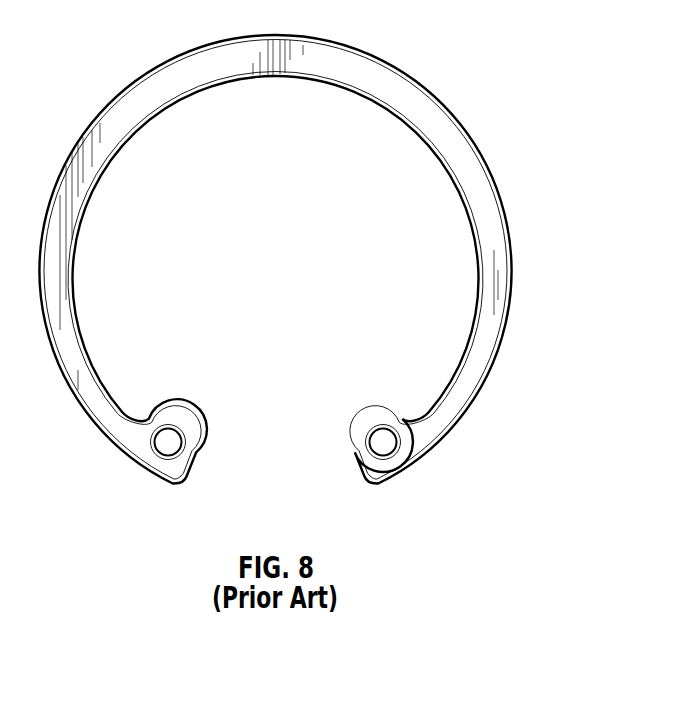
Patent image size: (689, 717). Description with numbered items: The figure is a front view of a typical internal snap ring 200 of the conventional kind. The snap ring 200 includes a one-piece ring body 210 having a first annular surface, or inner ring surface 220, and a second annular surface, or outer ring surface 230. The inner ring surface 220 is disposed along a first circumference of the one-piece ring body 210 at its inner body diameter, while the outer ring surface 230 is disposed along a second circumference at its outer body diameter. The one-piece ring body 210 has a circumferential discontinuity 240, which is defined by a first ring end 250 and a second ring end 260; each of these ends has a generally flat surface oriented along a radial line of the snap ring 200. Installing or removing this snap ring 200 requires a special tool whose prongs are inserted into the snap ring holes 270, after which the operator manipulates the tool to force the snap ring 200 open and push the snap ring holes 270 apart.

The snap ring 200 is at (309, 281).
The one-piece ring body 210 is at (309, 247).
The inner ring surface 220 is at (307, 83).
The outer ring surface 230 is at (280, 37).
The circumferential discontinuity 240 is at (320, 518).
The first ring end 250 is at (198, 462).
The second ring end 260 is at (352, 431).
The snap ring holes 270 is at (168, 443).